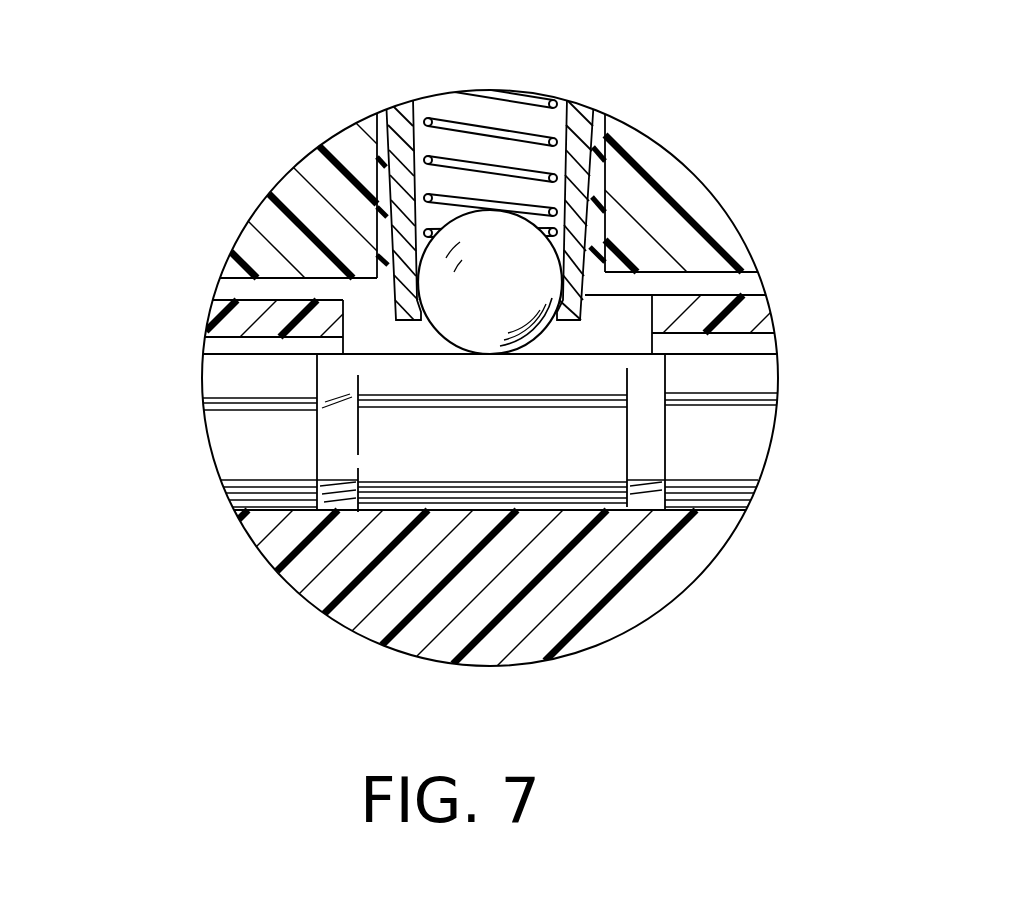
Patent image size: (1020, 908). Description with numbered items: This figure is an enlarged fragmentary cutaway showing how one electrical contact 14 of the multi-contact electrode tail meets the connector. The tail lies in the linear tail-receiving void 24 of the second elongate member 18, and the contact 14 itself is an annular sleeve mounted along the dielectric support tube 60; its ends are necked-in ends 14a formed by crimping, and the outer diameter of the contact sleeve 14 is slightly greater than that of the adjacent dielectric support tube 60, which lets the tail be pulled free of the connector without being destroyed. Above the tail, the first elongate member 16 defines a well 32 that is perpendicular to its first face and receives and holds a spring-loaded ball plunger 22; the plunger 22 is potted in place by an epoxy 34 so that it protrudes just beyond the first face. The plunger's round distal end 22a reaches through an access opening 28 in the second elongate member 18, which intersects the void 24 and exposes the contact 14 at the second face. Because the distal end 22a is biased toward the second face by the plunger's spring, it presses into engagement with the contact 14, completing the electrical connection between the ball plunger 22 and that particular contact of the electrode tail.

The electrical contact 14 is at (420, 477).
The necked-in ends 14a is at (337, 483).
The first elongate member 16 is at (657, 170).
The second elongate member 18 is at (440, 623).
The spring-loaded ball plunger 22 is at (471, 128).
The round distal end 22a is at (505, 325).
The tail-receiving void 24 is at (243, 352).
The access opening 28 is at (372, 327).
The well 32 is at (554, 160).
The epoxy 34 is at (600, 128).
The dielectric support tube 60 is at (745, 448).